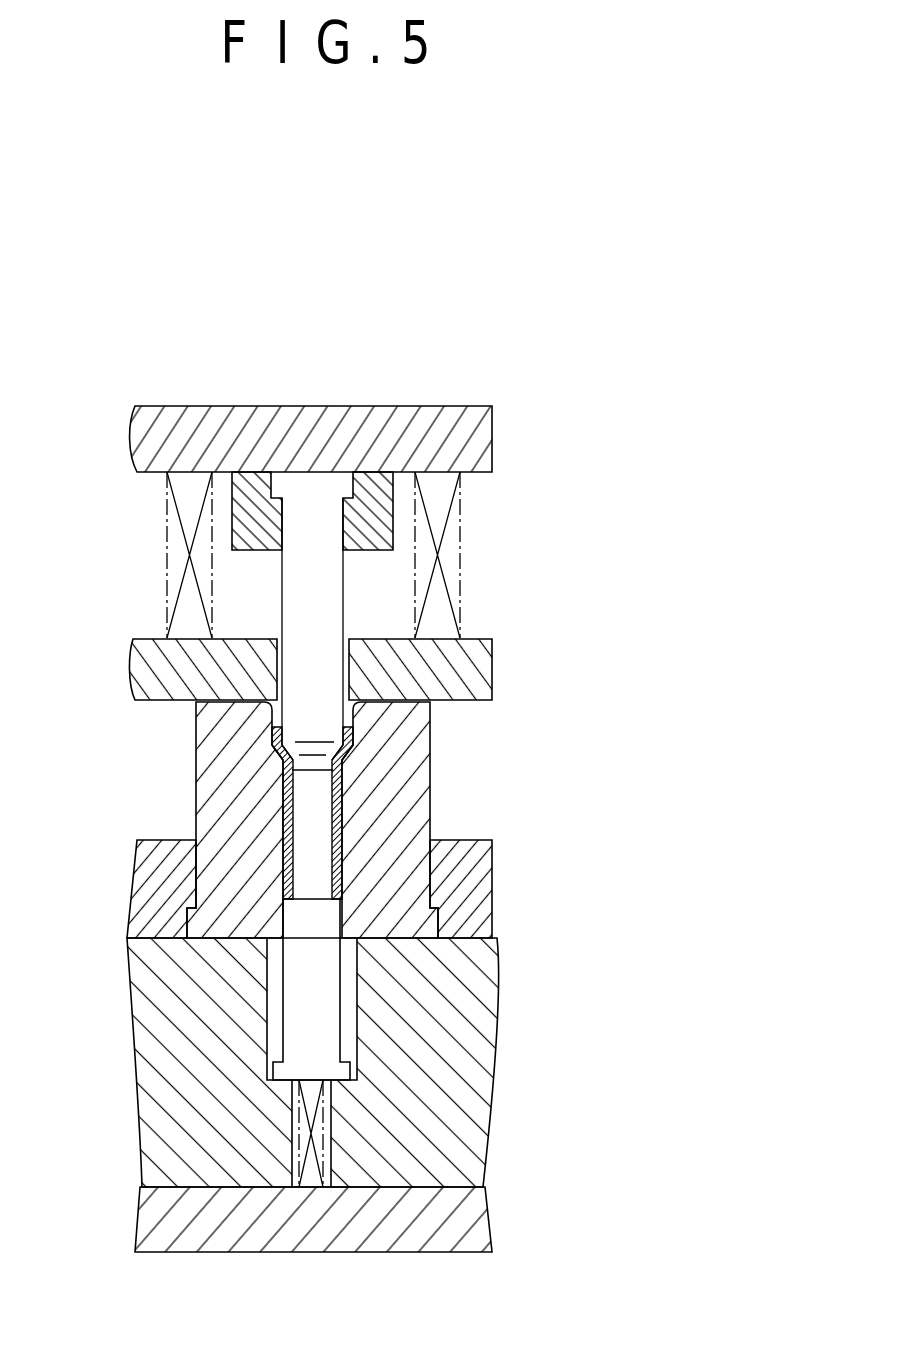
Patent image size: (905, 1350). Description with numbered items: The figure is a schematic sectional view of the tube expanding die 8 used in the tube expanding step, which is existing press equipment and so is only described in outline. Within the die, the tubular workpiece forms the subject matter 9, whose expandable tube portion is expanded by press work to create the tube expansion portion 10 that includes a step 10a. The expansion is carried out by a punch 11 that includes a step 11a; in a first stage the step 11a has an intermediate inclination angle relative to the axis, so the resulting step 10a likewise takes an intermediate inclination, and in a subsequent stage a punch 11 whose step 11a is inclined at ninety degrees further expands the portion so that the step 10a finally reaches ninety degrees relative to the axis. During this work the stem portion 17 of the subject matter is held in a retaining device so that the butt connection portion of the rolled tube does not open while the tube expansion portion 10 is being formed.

The tube expanding die 8 is at (460, 341).
The subject matter 9 is at (245, 828).
The tube expansion portion 10 is at (247, 745).
The step 10a is at (345, 749).
The punch 11 is at (369, 608).
The step 11a is at (300, 742).
The stem portion 17 is at (337, 815).